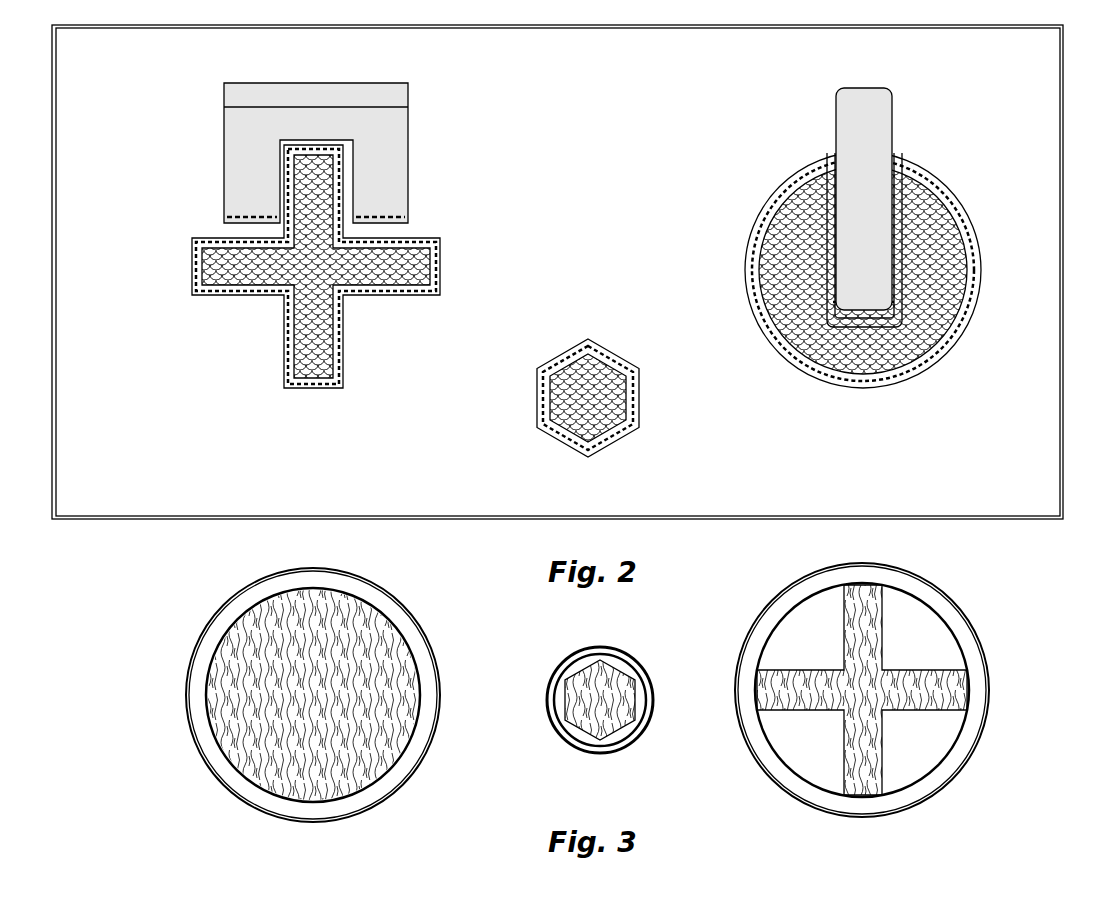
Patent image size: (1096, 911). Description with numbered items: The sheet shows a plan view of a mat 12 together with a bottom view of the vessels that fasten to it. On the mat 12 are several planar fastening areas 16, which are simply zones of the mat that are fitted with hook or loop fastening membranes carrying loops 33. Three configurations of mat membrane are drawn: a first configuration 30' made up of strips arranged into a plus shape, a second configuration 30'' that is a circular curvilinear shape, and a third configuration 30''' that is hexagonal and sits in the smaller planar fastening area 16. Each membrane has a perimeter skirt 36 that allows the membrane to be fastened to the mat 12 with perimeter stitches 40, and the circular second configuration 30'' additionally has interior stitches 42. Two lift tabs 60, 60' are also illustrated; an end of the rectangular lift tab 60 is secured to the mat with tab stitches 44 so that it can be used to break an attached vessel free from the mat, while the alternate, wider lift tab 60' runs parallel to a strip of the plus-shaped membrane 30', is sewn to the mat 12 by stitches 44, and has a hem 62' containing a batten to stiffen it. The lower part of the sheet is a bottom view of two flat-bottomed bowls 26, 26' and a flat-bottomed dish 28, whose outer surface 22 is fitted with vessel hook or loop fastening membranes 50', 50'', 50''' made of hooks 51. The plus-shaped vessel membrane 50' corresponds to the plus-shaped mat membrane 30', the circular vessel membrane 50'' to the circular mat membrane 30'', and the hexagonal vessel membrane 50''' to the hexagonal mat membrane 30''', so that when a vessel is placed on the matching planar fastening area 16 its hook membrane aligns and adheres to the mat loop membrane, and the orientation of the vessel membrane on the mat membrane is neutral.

In FIG. 2, the mat 12 is at (579, 95).
In FIG. 2, the planar fastening area 16 is at (437, 212).
In FIG. 2, the mat membrane configuration (plus shape) 30' is at (312, 258).
In FIG. 2, the mat membrane configuration (circular) 30'' is at (797, 247).
In FIG. 2, the mat membrane configuration (hexagonal) 30''' is at (588, 393).
In FIG. 2, the loops 33 is at (322, 335).
In FIG. 2, the perimeter skirt 36 is at (194, 298).
In FIG. 2, the perimeter stitches 40 is at (200, 266).
In FIG. 2, the interior stitches 42 is at (898, 200).
In FIG. 2, the tab stitches 44 is at (375, 216).
In FIG. 2, the lift tab 60 is at (864, 199).
In FIG. 2, the lift tab (alternate version) 60' is at (316, 153).
In FIG. 2, the hem 62' is at (316, 95).
In FIG. 3, the outer surface 22 is at (400, 598).
In FIG. 3, the bowl 26 is at (996, 580).
In FIG. 3, the bowl 26' is at (272, 695).
In FIG. 3, the dish 28 is at (628, 645).
In FIG. 3, the vessel fastening membrane (plus shape) 50' is at (270, 638).
In FIG. 3, the vessel fastening membrane (circular) 50'' is at (800, 688).
In FIG. 3, the vessel fastening membrane (hexagonal) 50''' is at (600, 689).
In FIG. 3, the hooks 51 is at (395, 738).